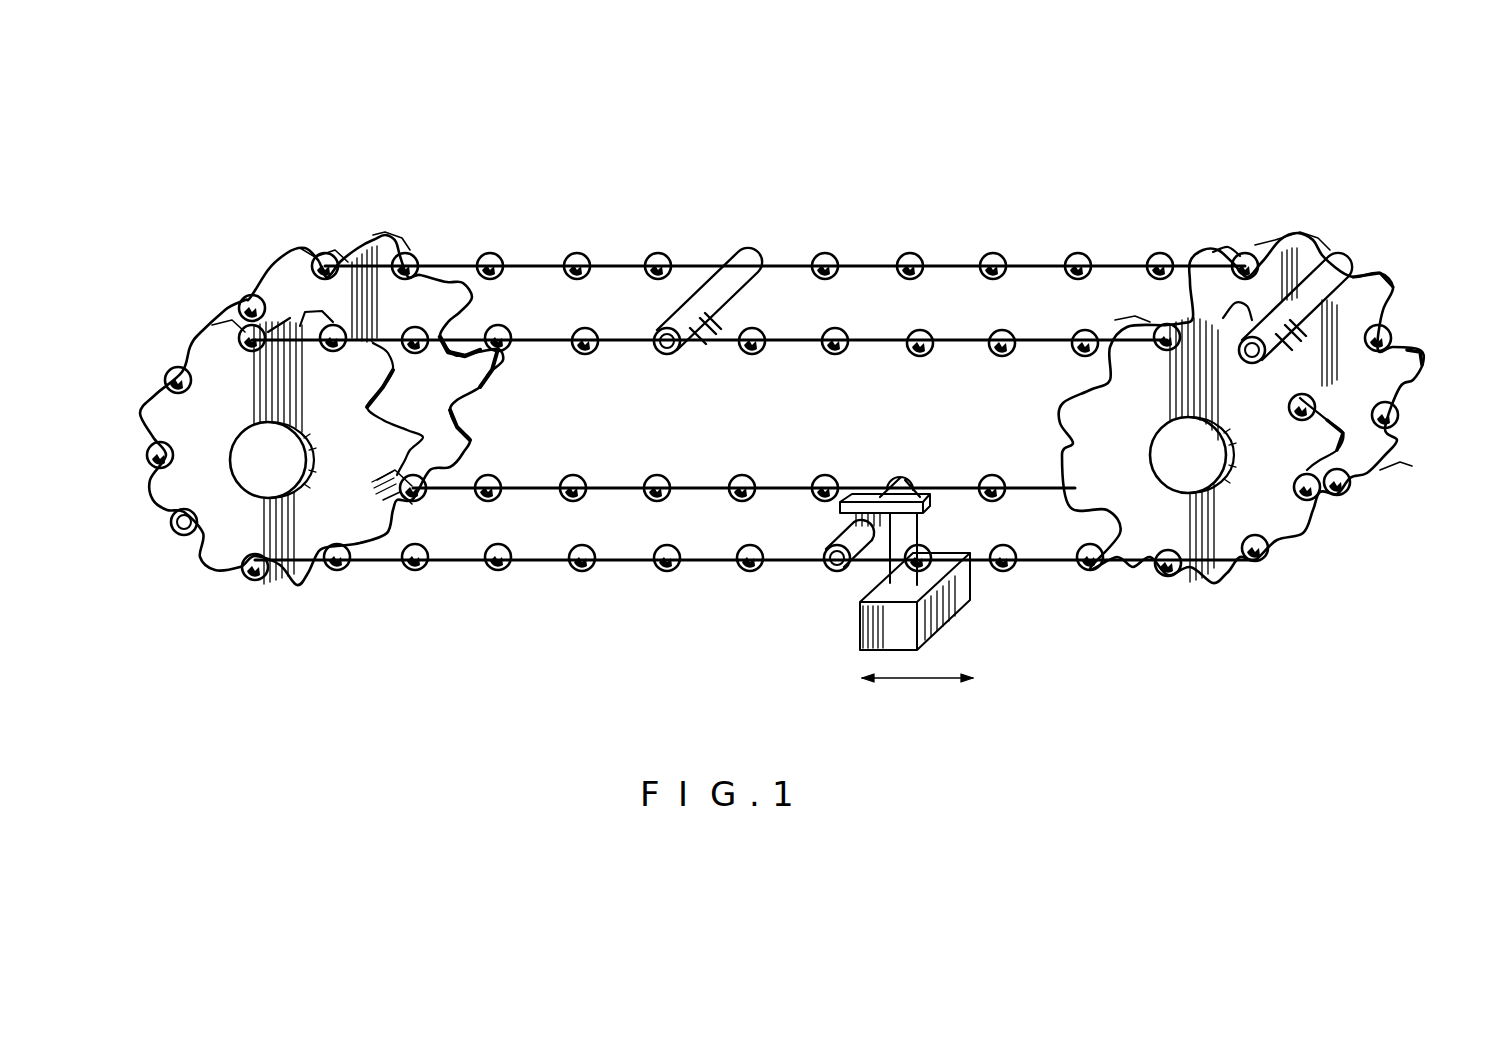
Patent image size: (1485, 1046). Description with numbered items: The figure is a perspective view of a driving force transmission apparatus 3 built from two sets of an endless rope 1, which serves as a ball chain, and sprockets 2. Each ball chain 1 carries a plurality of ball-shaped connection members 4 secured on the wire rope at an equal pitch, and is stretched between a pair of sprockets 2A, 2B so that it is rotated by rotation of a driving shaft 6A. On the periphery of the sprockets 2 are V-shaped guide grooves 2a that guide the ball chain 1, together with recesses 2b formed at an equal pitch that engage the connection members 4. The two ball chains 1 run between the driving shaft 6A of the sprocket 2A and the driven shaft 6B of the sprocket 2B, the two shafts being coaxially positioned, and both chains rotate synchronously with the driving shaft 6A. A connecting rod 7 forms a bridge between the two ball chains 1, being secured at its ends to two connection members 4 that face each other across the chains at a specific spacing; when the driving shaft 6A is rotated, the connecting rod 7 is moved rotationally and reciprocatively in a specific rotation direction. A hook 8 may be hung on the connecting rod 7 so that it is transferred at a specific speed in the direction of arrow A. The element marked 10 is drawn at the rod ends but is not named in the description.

The endless rope 1 is at (703, 484).
The sprockets 2 is at (339, 241).
The sprocket 2A is at (380, 238).
The sprocket 2B is at (1382, 470).
The guide grooves 2a is at (288, 300).
The recesses 2b is at (410, 507).
The driving force transmission apparatus 3 is at (869, 250).
The connection members 4 is at (570, 254).
The driving shaft 6A is at (257, 486).
The driven shaft 6B is at (1170, 482).
The connecting rod 7 is at (736, 255).
The hook 8 is at (870, 572).
The hole 10 is at (667, 352).